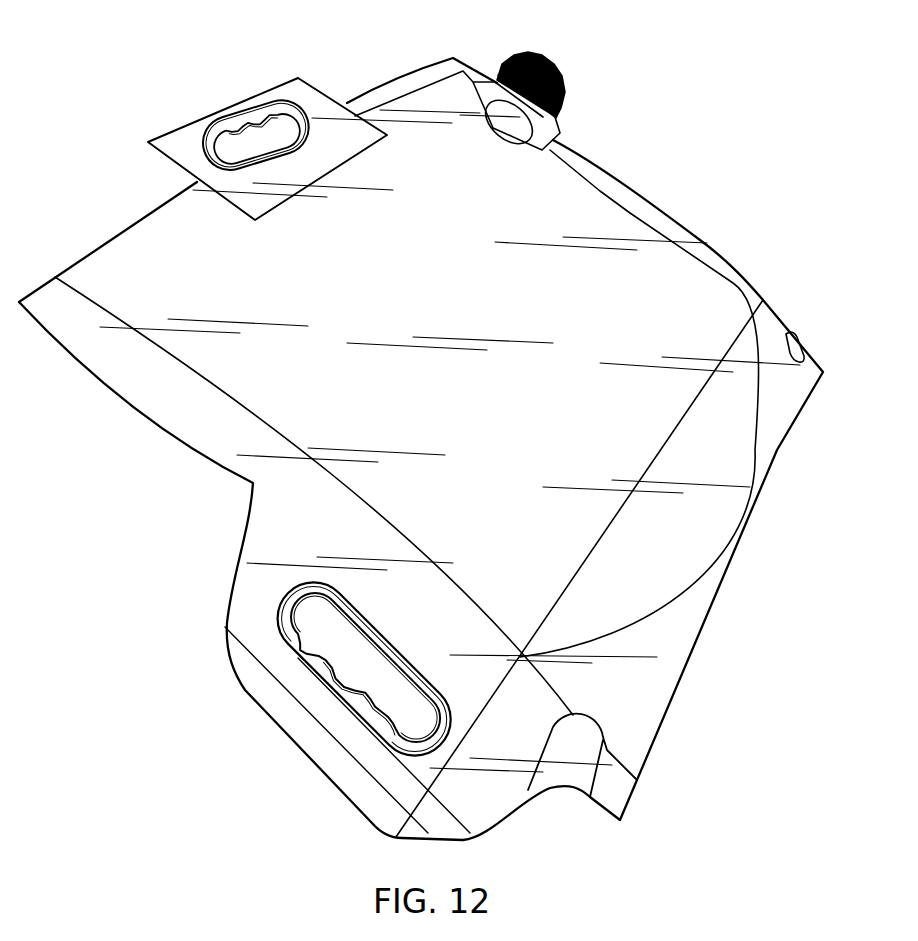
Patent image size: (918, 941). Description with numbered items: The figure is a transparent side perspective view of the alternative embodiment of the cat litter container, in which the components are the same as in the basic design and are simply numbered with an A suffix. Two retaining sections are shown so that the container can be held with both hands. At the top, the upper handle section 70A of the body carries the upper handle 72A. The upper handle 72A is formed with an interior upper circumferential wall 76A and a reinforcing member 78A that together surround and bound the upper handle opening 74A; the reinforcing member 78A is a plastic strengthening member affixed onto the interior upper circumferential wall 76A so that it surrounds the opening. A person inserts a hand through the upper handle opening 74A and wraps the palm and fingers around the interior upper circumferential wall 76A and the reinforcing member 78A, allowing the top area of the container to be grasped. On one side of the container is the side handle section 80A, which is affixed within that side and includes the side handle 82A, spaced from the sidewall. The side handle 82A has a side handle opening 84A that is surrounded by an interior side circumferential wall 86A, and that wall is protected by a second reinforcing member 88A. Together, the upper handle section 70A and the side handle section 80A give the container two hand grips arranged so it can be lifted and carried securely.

The upper handle section 70A is at (165, 115).
The upper handle 72A is at (255, 134).
The upper handle opening 74A is at (256, 138).
The interior upper circumferential wall 76A is at (222, 147).
The reinforcing member 78A is at (256, 135).
The side handle section 80A is at (305, 669).
The side handle 82A is at (364, 669).
The side handle opening 84A is at (362, 671).
The interior side circumferential wall 86A is at (415, 757).
The reinforcing member 88A is at (364, 669).